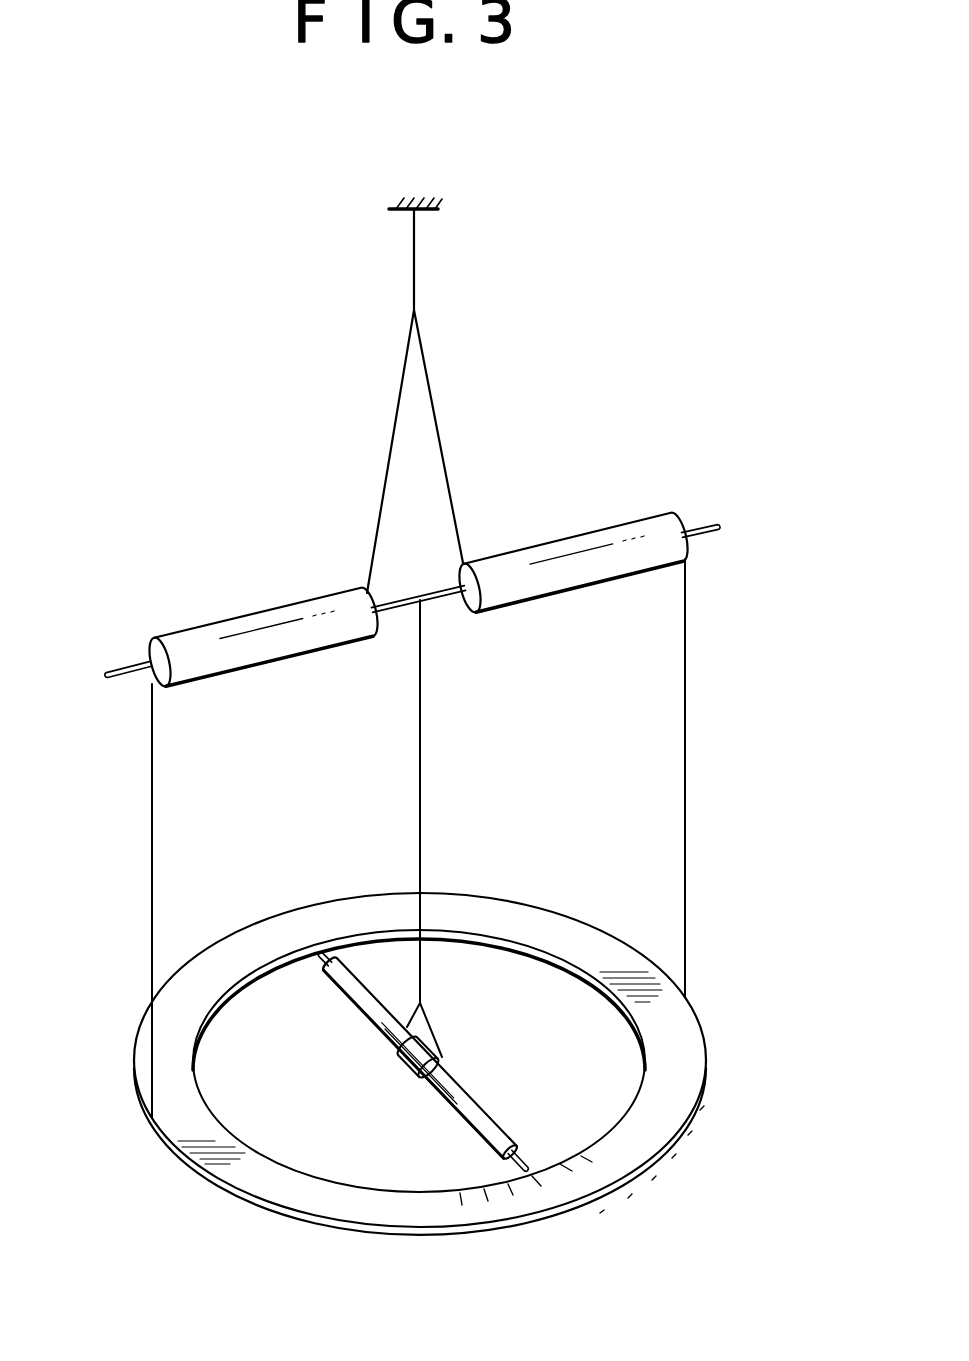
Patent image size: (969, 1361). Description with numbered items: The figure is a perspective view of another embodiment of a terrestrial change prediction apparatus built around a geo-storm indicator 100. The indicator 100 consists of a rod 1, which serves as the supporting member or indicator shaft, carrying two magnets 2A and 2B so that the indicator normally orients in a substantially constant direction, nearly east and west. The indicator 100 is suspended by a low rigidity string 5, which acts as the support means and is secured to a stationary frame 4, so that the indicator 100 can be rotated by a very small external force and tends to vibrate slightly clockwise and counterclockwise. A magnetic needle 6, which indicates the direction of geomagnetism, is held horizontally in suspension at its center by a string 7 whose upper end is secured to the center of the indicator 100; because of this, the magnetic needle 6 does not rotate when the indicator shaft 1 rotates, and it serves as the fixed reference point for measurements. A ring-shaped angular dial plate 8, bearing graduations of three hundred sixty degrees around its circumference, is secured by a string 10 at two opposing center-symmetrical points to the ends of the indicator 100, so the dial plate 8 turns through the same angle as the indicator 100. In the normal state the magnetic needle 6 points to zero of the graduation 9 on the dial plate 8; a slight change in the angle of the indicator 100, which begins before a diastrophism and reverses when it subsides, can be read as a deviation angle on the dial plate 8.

The indicator 100 is at (649, 396).
The rod 1 is at (707, 518).
The magnet 2A is at (240, 611).
The magnet 2B is at (570, 538).
The stationary frame 4 is at (437, 205).
The string 5 is at (438, 398).
The magnetic needle 6 is at (466, 1086).
The string 7 is at (421, 738).
The ring-shaped angular dial plate 8 is at (578, 925).
The graduation 9 is at (570, 1175).
The string 10 is at (686, 742).